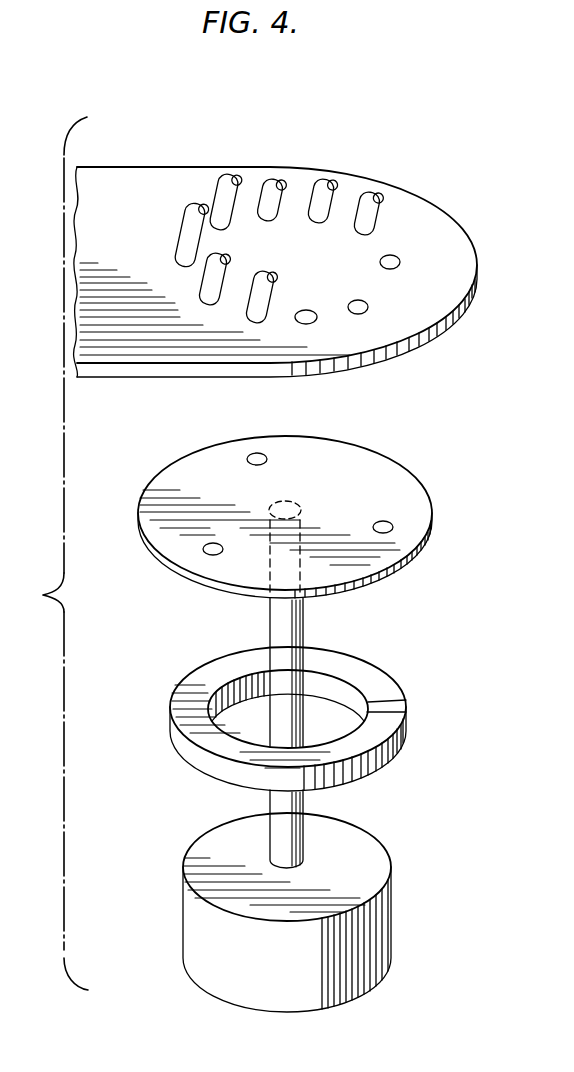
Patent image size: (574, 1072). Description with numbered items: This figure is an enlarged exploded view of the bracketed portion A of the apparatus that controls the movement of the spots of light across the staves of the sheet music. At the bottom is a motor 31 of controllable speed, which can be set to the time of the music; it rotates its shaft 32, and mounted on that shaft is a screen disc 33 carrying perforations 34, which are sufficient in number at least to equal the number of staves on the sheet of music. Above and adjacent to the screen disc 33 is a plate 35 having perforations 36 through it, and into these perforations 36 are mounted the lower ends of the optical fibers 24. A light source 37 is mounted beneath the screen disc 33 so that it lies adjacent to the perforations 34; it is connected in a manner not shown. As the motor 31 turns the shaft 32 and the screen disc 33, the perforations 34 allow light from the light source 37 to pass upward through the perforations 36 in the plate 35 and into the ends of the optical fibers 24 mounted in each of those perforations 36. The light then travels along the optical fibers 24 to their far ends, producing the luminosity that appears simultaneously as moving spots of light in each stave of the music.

The optical fibers 24 is at (283, 188).
The motor 31 is at (284, 990).
The shaft 32 is at (303, 622).
The screen disc 33 is at (173, 571).
The perforations 34 is at (266, 464).
The plate 35 is at (432, 204).
The perforations 36 is at (317, 319).
The light source 37 is at (384, 673).
The portion A is at (54, 553).